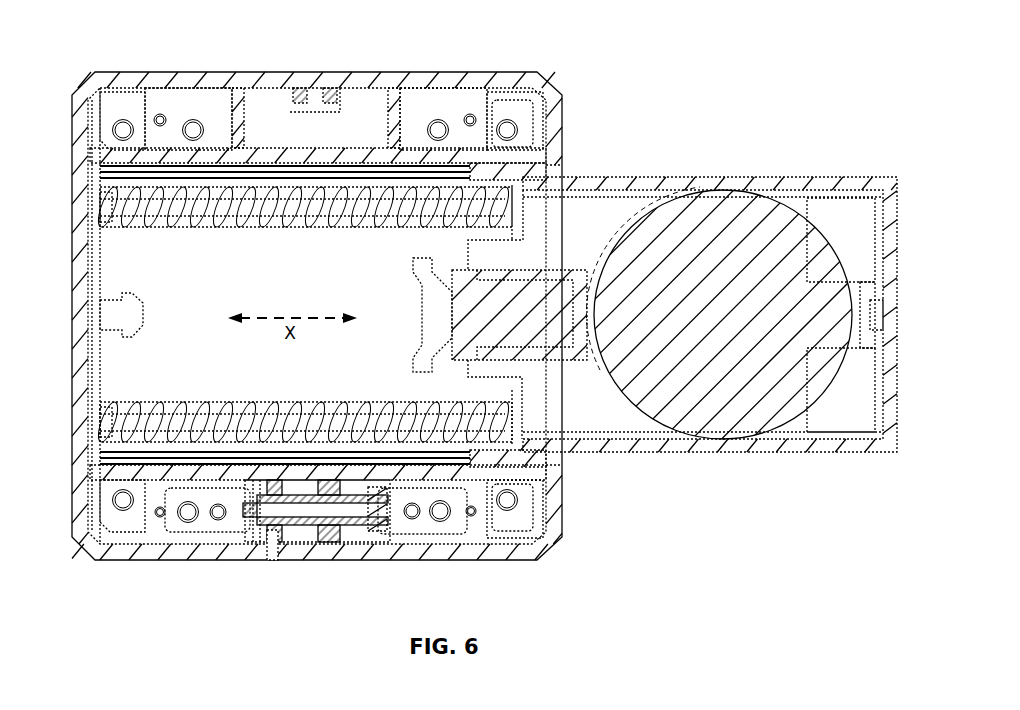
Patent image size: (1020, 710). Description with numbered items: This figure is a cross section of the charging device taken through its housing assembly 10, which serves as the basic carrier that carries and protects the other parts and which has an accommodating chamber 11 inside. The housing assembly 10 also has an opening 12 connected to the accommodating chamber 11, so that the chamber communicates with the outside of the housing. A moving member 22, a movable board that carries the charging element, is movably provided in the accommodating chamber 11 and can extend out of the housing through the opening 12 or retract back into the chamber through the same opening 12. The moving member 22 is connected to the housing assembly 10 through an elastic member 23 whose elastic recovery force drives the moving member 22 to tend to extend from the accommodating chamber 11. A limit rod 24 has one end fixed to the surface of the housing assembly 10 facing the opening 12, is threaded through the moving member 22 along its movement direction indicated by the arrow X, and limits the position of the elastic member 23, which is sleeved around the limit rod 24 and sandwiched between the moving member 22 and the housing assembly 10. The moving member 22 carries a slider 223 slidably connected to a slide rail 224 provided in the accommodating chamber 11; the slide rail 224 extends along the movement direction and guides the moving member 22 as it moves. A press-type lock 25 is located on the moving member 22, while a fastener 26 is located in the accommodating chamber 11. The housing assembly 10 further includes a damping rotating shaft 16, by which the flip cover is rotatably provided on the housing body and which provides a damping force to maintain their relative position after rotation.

The housing assembly 10 is at (392, 72).
The accommodating chamber 11 is at (118, 261).
The opening 12 is at (568, 177).
The damping rotating shaft 16 is at (300, 507).
The moving member 22 is at (690, 186).
The elastic member 23 is at (318, 214).
The limit rod 24 is at (402, 214).
The press-type lock 25 is at (413, 360).
The fastener 26 is at (130, 308).
The slider 223 is at (477, 175).
The slide rail 224 is at (247, 172).